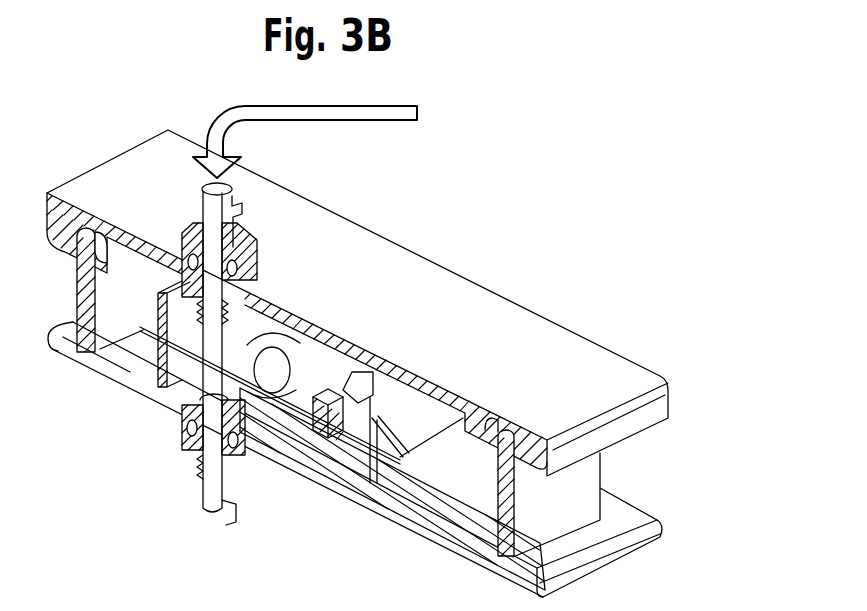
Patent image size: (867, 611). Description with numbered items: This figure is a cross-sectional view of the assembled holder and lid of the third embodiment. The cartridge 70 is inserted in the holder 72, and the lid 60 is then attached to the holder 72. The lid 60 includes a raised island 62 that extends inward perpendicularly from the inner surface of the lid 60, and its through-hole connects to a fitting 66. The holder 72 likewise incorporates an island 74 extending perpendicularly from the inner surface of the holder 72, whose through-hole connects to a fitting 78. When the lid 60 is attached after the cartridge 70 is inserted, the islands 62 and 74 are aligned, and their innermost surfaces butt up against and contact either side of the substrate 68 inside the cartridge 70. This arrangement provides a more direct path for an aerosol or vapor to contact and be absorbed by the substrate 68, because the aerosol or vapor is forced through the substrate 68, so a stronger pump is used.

The lid 60 is at (567, 347).
The raised island 62 is at (253, 337).
The fitting 66 is at (250, 242).
The substrate 68 is at (163, 403).
The cartridge 70 is at (303, 430).
The holder 72 is at (618, 507).
The island 74 is at (243, 410).
The fitting 78 is at (237, 520).